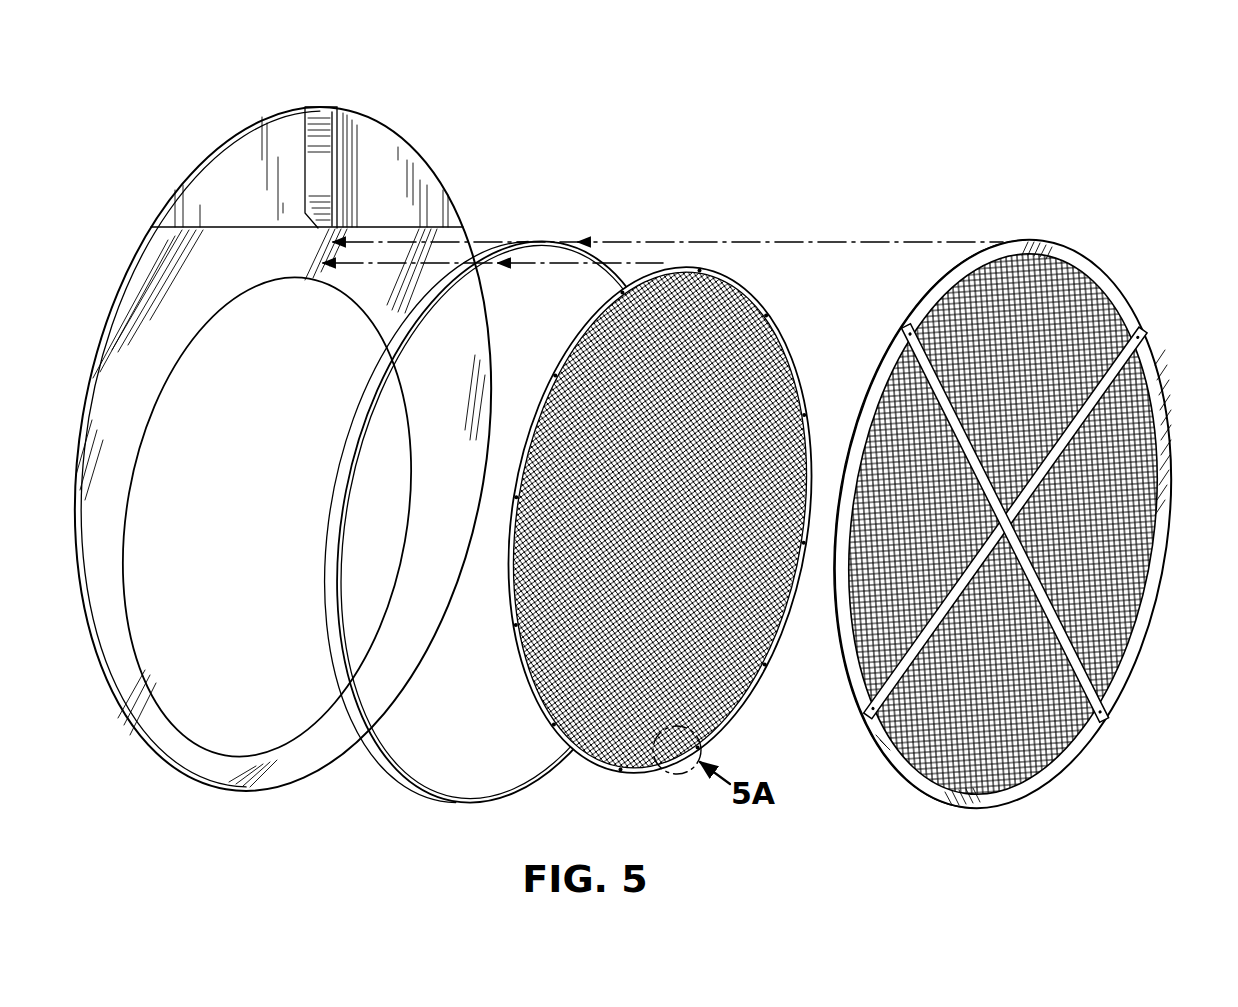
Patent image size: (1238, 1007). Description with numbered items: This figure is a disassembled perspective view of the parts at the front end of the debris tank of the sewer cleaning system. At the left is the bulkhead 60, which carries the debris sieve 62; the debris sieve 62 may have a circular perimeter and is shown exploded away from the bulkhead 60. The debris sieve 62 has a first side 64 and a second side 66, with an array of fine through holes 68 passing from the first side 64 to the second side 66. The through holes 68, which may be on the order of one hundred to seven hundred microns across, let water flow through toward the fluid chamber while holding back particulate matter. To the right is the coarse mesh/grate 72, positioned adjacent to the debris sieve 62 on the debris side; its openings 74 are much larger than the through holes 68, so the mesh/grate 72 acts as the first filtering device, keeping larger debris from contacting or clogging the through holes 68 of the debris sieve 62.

The bulkhead 60 is at (237, 128).
The debris sieve 62 is at (572, 331).
The first side 64 is at (742, 683).
The second side 66 is at (518, 668).
The through holes 68 is at (773, 382).
The mesh/grate 72 is at (1078, 247).
The openings 74 is at (1147, 415).